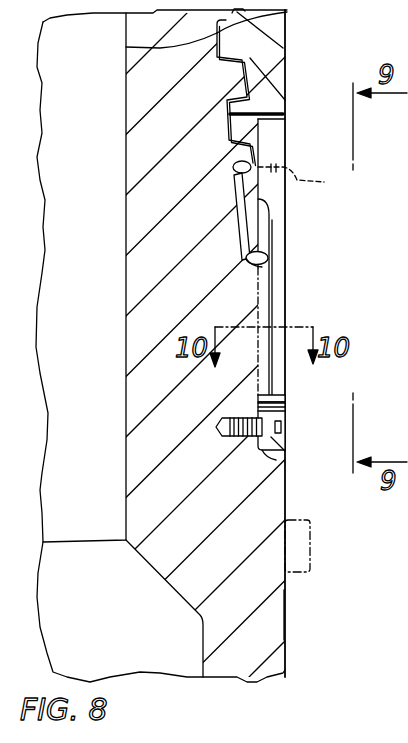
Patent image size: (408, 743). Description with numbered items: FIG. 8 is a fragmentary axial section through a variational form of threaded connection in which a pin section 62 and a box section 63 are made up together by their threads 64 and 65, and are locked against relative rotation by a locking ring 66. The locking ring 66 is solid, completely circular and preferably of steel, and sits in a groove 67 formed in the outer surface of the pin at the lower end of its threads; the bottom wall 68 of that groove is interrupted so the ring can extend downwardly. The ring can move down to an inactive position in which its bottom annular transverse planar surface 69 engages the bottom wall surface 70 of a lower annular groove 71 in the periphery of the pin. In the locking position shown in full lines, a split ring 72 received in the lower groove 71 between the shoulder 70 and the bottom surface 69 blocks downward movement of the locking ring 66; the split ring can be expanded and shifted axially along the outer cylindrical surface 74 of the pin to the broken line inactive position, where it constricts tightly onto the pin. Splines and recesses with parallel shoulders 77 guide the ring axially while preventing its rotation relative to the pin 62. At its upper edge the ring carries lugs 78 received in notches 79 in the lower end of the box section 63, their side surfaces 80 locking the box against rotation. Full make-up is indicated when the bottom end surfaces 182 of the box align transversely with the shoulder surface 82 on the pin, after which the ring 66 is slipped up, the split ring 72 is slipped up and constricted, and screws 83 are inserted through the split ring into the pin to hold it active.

The pin section 62 is at (137, 89).
The box section 63 is at (287, 52).
The threads 64 is at (162, 40).
The threads 65 is at (287, 13).
The locking ring 66 is at (280, 220).
The groove 67 is at (237, 224).
The bottom wall 68 is at (246, 259).
The bottom annular transverse planar surface 69 is at (283, 396).
The bottom wall surface 70 is at (263, 452).
The lower annular groove 71 is at (258, 403).
The split ring 72 is at (276, 411).
The outer cylindrical surface 74 is at (287, 609).
The shoulders 77 is at (396, 610).
The lugs 78 is at (273, 135).
The notches 79 is at (284, 113).
The side surfaces 80 is at (272, 150).
The shoulder surface 82 is at (233, 170).
The screws 83 is at (222, 430).
The bottom end surfaces 182 is at (313, 180).